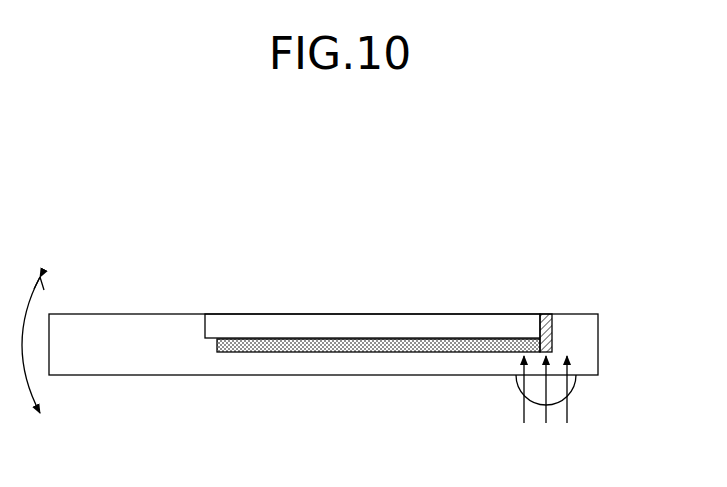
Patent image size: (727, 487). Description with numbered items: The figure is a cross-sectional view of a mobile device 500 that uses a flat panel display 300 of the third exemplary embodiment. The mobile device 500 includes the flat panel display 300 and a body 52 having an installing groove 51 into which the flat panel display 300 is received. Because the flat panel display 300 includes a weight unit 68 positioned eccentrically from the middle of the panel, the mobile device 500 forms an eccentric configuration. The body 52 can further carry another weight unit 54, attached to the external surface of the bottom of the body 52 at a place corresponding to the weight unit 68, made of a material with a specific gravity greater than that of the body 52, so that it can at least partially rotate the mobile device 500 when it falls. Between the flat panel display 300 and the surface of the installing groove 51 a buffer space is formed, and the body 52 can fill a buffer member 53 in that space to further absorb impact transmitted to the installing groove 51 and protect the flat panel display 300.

The mobile device 500 is at (308, 224).
The body 52 is at (122, 351).
The flat panel display 300 is at (358, 328).
The buffer member 53 is at (397, 351).
The installing groove 51 is at (298, 351).
The weight unit 68 is at (552, 326).
The weight unit 54 is at (573, 386).